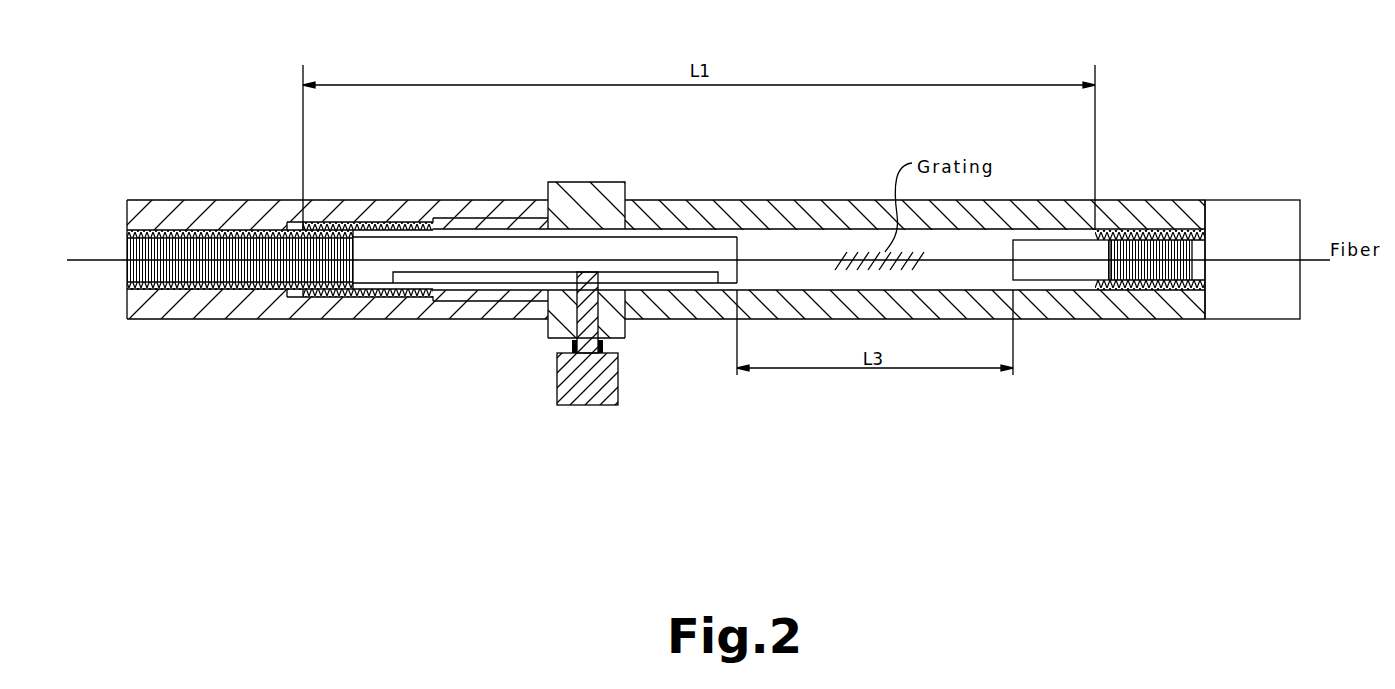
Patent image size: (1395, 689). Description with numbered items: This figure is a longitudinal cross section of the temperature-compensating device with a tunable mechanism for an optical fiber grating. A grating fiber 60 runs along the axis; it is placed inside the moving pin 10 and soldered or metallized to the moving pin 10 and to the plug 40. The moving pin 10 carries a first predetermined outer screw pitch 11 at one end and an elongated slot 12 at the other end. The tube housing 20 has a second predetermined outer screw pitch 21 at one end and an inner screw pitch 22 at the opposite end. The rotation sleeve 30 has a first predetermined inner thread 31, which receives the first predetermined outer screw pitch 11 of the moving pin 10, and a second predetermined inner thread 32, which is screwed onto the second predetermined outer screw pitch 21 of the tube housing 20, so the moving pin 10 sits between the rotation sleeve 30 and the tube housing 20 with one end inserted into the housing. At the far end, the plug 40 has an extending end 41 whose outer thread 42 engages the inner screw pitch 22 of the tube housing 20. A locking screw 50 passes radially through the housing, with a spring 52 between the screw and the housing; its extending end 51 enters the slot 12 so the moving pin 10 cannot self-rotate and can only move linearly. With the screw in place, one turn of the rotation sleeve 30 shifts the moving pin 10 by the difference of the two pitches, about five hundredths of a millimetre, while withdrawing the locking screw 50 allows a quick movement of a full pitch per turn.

The moving pin 10 is at (602, 248).
The first predetermined outer screw pitch 11 is at (185, 287).
The elongated slot 12 is at (655, 278).
The tube housing 20 is at (713, 210).
The second predetermined outer screw pitch 21 is at (357, 225).
The inner screw pitch 22 is at (1165, 273).
The rotation sleeve 30 is at (170, 215).
The first predetermined inner thread 31 is at (225, 290).
The second predetermined inner thread 32 is at (333, 292).
The plug 40 is at (1240, 213).
The extending end 41 is at (1063, 270).
The outer thread 42 is at (1135, 230).
The locking screw 50 is at (585, 392).
The extending end 51 is at (608, 330).
The spring 52 is at (557, 345).
The grating fiber 60 is at (437, 260).